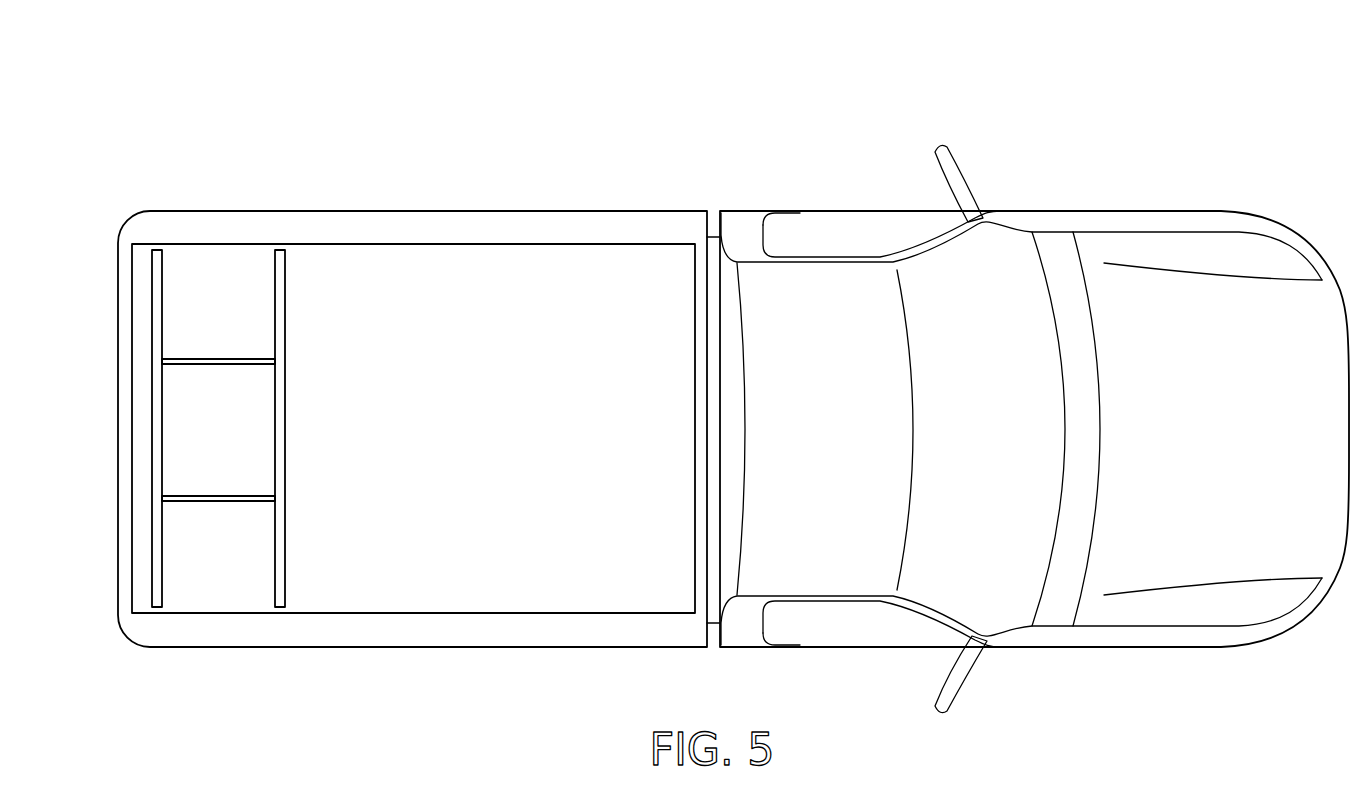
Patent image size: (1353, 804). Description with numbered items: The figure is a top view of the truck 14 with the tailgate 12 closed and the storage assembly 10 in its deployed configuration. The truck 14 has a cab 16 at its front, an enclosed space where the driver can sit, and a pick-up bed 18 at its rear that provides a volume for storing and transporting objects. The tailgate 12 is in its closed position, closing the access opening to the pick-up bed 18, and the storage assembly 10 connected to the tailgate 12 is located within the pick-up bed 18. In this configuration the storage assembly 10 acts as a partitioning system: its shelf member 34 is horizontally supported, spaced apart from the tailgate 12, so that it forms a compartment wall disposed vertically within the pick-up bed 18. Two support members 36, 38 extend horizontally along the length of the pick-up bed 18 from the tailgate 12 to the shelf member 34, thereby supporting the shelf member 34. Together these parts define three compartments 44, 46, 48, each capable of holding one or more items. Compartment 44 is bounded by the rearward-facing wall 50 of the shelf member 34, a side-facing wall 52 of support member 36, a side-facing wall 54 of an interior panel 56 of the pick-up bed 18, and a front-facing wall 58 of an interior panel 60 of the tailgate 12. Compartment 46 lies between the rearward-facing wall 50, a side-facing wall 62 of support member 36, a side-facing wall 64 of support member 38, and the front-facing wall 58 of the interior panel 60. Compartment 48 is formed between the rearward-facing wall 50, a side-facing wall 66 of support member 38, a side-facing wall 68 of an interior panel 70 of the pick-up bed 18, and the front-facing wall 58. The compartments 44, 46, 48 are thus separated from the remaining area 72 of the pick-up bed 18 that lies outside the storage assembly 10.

The storage assembly 10 is at (249, 432).
The tailgate 12 is at (135, 583).
The truck 14 is at (705, 373).
The cab 16 is at (802, 560).
The pick-up bed 18 is at (419, 402).
The shelf member 34 is at (285, 505).
The support member 36 is at (205, 357).
The support member 38 is at (197, 507).
The compartment 44 is at (310, 270).
The compartment 46 is at (311, 422).
The compartment 48 is at (310, 582).
The rearward-facing wall 50 is at (268, 259).
The side-facing wall 52 is at (253, 357).
The side-facing wall 54 is at (247, 248).
The interior panel 56 is at (187, 248).
The front-facing wall 58 is at (163, 408).
The interior panel 60 is at (153, 497).
The side-facing wall 62 is at (237, 367).
The side-facing wall 64 is at (208, 493).
The side-facing wall 66 is at (252, 507).
The side-facing wall 68 is at (193, 613).
The interior panel 70 is at (297, 613).
The remaining area 72 is at (540, 451).